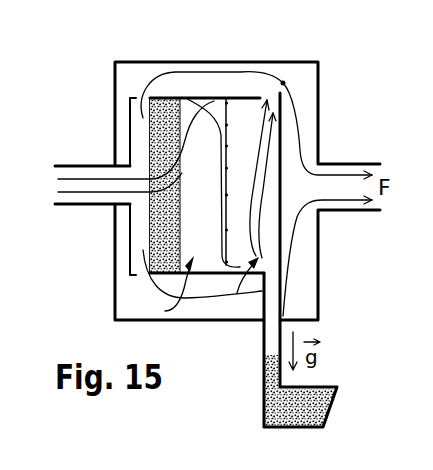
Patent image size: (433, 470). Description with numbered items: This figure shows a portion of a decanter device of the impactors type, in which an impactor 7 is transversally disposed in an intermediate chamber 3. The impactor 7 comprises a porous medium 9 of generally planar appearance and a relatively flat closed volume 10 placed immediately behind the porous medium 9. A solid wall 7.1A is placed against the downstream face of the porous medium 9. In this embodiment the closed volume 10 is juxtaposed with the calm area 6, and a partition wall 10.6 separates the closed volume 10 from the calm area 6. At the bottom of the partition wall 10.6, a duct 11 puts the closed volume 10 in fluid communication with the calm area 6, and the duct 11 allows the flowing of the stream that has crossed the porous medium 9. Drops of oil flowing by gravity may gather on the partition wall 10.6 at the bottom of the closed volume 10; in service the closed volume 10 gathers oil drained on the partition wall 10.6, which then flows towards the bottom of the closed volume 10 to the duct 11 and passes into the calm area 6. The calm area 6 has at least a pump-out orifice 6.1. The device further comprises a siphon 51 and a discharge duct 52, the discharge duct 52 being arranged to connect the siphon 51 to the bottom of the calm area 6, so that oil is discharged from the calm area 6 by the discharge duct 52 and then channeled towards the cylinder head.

The intermediate chamber 3 is at (140, 73).
The porous medium 9 is at (152, 146).
The closed volume 10 is at (165, 311).
The partition wall 10.6 is at (233, 138).
The solid wall 7.1A is at (186, 98).
The impactor 7 is at (203, 90).
The pump-out orifice 6.1 is at (283, 83).
The duct 11 is at (213, 263).
The calm area 6 is at (262, 294).
The discharge duct 52 is at (262, 342).
The siphon 51 is at (262, 417).